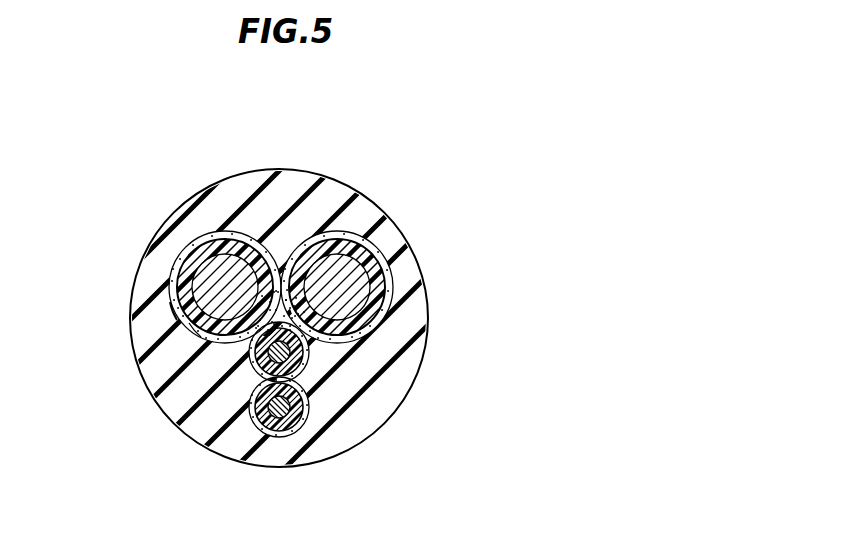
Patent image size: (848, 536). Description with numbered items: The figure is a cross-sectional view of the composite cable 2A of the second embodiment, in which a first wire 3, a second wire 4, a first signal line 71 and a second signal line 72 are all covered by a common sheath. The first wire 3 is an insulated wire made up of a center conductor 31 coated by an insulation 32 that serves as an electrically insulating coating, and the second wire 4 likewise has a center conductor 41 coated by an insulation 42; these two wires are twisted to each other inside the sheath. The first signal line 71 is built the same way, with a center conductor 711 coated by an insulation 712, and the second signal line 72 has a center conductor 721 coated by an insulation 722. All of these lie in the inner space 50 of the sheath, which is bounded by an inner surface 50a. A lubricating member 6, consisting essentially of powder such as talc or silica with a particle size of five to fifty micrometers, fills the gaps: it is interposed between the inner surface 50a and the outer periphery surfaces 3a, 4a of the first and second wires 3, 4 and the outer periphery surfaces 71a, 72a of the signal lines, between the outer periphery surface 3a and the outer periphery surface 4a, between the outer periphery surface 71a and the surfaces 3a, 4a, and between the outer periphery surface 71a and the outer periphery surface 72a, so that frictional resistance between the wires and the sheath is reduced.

The composite cable 2A is at (173, 162).
The first wire 3 is at (288, 250).
The outer periphery surface of the first wire 3a is at (193, 247).
The insulation 32 is at (193, 262).
The center conductor 31 is at (210, 280).
The second wire 4 is at (372, 250).
The outer periphery surface of the second wire 4a is at (370, 253).
The insulation 42 is at (370, 270).
The center conductor 41 is at (352, 298).
The lubricating member 6 is at (170, 300).
The inner space of the sheath 50 is at (166, 328).
The inner surface of the inner space 50a is at (207, 332).
The first signal line 71 is at (379, 250).
The outer periphery surface of the first signal line 71a is at (252, 362).
The insulation 712 is at (300, 352).
The center conductor 711 is at (287, 357).
The second signal line 72 is at (373, 252).
The outer periphery surface of the second signal line 72a is at (255, 428).
The insulation 722 is at (300, 406).
The center conductor 721 is at (287, 412).